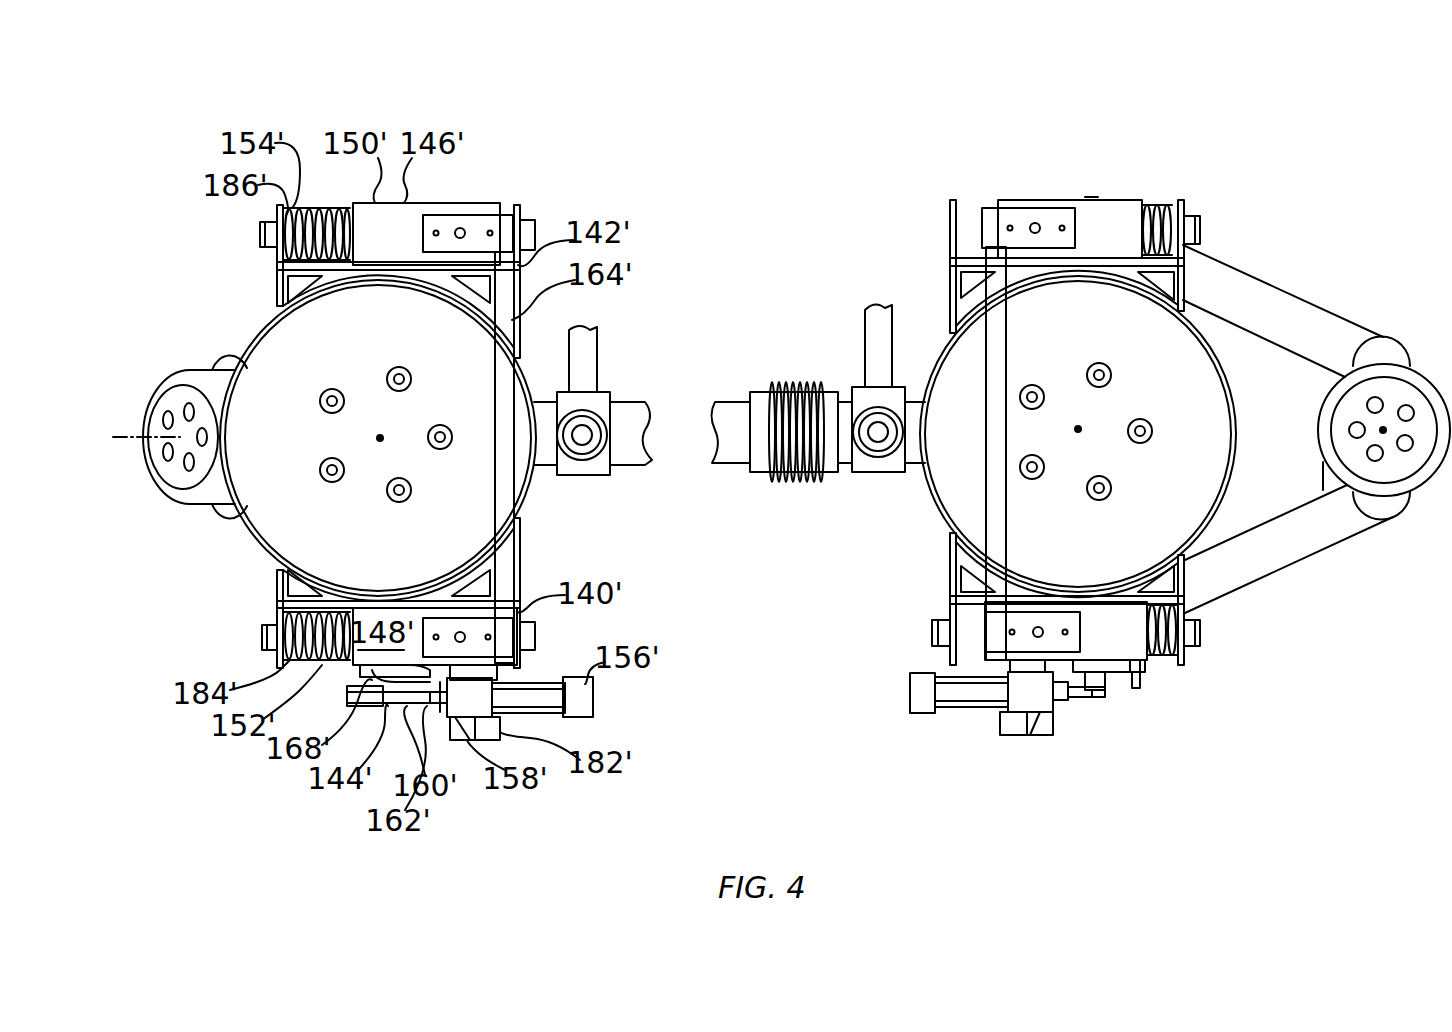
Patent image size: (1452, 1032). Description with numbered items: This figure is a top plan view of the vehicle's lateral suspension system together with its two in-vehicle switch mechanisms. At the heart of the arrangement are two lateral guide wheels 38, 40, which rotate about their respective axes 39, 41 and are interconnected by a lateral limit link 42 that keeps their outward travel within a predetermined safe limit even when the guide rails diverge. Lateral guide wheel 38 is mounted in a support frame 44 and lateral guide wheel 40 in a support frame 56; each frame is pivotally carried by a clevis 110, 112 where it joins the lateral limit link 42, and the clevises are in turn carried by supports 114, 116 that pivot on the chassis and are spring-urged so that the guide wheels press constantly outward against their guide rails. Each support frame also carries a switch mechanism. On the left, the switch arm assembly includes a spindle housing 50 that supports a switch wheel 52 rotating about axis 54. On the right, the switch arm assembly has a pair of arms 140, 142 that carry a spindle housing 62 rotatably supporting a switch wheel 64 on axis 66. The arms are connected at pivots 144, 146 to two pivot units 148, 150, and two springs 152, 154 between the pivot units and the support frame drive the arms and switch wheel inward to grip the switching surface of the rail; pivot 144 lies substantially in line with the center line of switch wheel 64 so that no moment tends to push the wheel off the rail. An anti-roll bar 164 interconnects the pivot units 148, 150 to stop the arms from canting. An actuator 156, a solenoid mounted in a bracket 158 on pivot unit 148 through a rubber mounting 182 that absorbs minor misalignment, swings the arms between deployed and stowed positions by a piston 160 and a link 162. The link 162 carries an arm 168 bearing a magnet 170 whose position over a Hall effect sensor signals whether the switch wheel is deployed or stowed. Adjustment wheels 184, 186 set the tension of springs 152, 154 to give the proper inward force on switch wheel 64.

The lateral guide wheel 38 is at (304, 556).
The axis 39 is at (380, 438).
The lateral guide wheel 40 is at (1181, 486).
The axis 41 is at (1078, 429).
The lateral limit link 42 is at (740, 402).
The support frame 44 is at (560, 490).
The spindle housing 50 is at (226, 517).
The switch wheel 52 is at (175, 487).
The axis 54 is at (113, 437).
The support frame 56 is at (878, 490).
The spindle housing 62 is at (1393, 510).
The switch wheel 64 is at (1322, 440).
The axis 66 is at (1383, 430).
The clevis 110 is at (600, 395).
The clevis 112 is at (865, 400).
The support 114 is at (588, 342).
The support 116 is at (876, 335).
The arm 140 is at (1293, 545).
The arm 142 is at (1232, 285).
The pivot 144 is at (1102, 700).
The pivot 146 is at (1092, 200).
The pivot unit 148 is at (1133, 639).
The pivot unit 150 is at (1018, 200).
The spring 152 is at (1150, 662).
The spring 154 is at (1152, 210).
The actuator 156 is at (915, 693).
The bracket 158 is at (1030, 735).
The piston 160 is at (1082, 700).
The link 162 is at (1092, 700).
The anti-roll bar 164 is at (1000, 330).
The arm 168 is at (1115, 674).
The magnet 170 is at (1140, 672).
The rubber mounting 182 is at (1010, 718).
The adjustment wheel 184 is at (1172, 655).
The adjustment wheel 186 is at (1174, 210).